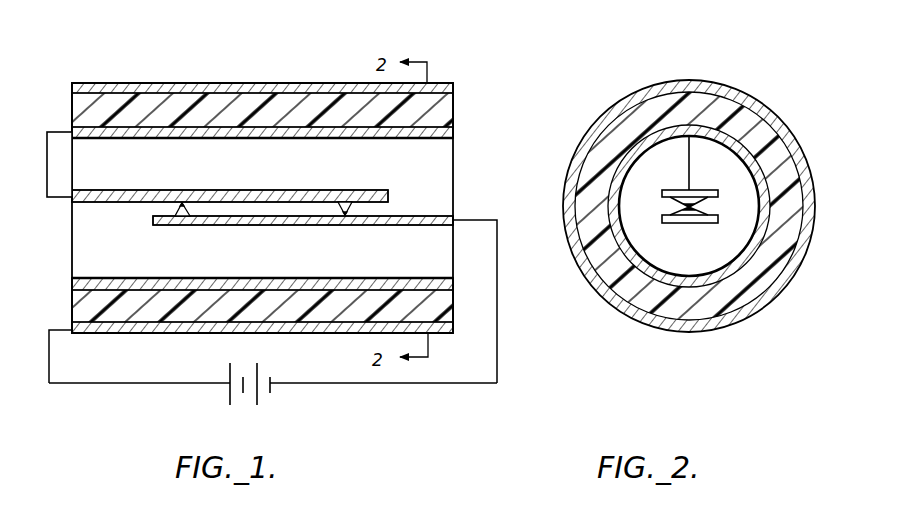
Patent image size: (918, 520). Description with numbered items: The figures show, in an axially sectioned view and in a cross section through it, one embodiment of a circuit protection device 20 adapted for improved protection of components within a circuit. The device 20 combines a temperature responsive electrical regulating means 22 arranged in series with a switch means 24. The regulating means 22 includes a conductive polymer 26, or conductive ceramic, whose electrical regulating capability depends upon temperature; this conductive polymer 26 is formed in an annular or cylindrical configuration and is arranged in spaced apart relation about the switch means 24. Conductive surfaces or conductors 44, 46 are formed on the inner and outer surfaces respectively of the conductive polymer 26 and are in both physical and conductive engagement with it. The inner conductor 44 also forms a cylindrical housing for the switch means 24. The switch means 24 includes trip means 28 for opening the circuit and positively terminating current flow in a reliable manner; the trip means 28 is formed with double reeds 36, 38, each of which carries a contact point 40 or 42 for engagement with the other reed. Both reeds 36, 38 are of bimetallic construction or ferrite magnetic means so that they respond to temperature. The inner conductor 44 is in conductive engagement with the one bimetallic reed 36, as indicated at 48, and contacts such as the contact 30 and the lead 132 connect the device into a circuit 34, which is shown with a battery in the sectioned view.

In FIG. 1, the circuit protection device 20 is at (334, 50).
In FIG. 2, the circuit protection device 20 is at (744, 56).
In FIG. 1, the temperature responsive electrical regulating means 22 is at (462, 110).
In FIG. 2, the temperature responsive electrical regulating means 22 is at (713, 299).
In FIG. 1, the switch means 24 is at (503, 150).
In FIG. 2, the switch means 24 is at (655, 250).
In FIG. 1, the conductive polymer 26 is at (403, 297).
In FIG. 2, the conductive polymer 26 is at (720, 103).
In FIG. 1, the trip means 28 is at (320, 184).
In FIG. 2, the trip means 28 is at (729, 169).
In FIG. 1, the contact 30 is at (461, 220).
In FIG. 1, the circuit 34 is at (398, 390).
In FIG. 1, the reed 36 is at (224, 190).
In FIG. 1, the reed 38 is at (296, 228).
In FIG. 1, the contact point 40 is at (355, 203).
In FIG. 1, the contact point 42 is at (175, 209).
In FIG. 1, the inner conductive surface 44 is at (314, 139).
In FIG. 2, the inner conductive surface 44 is at (717, 277).
In FIG. 1, the outer conductive surface 46 is at (268, 84).
In FIG. 2, the outer conductive surface 46 is at (640, 95).
In FIG. 1, the conductive engagement 48 is at (54, 132).
In FIG. 2, the conductive engagement 48 is at (682, 162).
In FIG. 1, the lead 132 is at (62, 336).